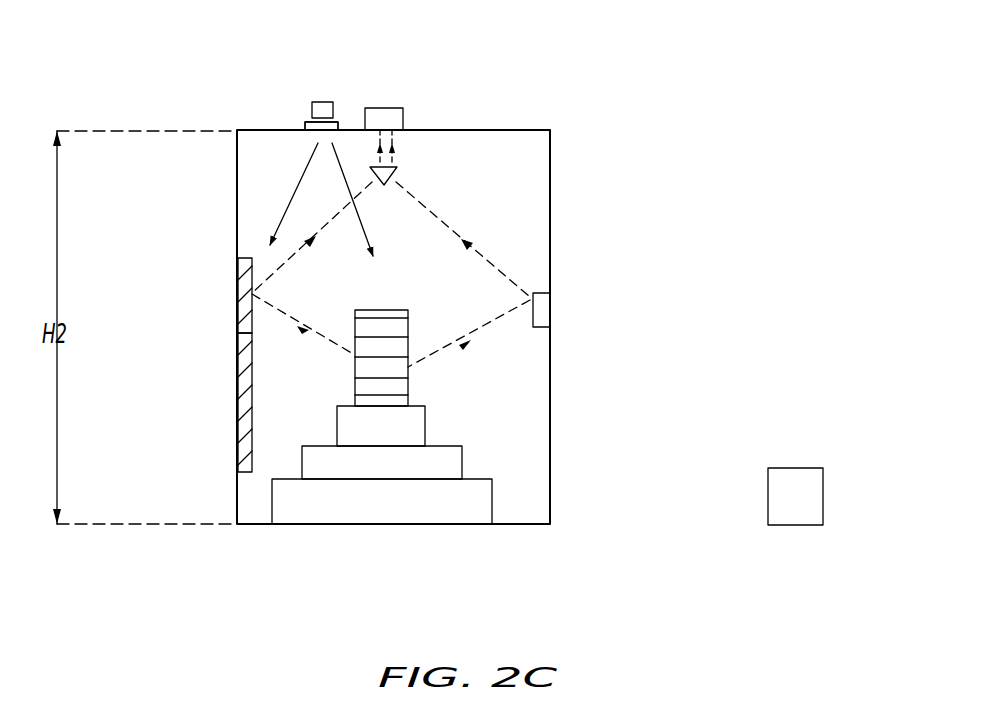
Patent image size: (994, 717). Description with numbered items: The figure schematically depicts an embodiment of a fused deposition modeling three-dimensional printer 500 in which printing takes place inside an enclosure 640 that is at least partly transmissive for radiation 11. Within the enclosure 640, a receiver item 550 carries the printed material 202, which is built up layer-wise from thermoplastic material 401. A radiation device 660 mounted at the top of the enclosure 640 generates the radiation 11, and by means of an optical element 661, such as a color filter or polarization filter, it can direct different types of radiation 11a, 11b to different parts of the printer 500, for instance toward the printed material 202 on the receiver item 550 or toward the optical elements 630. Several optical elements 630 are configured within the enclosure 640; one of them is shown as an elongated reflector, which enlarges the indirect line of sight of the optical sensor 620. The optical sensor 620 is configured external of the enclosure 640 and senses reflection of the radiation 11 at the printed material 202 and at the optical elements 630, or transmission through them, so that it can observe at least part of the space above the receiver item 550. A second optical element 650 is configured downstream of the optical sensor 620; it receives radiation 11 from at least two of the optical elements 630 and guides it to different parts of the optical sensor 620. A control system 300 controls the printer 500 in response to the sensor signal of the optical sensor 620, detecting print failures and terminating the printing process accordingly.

The fused deposition modeling 3D printer 500 is at (675, 75).
The enclosure 640 is at (620, 414).
The radiation device 660 is at (301, 92).
The optical element 661 is at (305, 125).
The optical sensor 620 is at (392, 97).
The second optical element 650 is at (399, 156).
The radiation 11 is at (305, 208).
The radiation 11a is at (290, 200).
The radiation 11b is at (363, 224).
The optical element 630 is at (213, 443).
The 3D printed material 202 is at (378, 385).
The thermoplastic material 401 is at (337, 372).
The receiver item 550 is at (433, 381).
The control system 300 is at (791, 428).